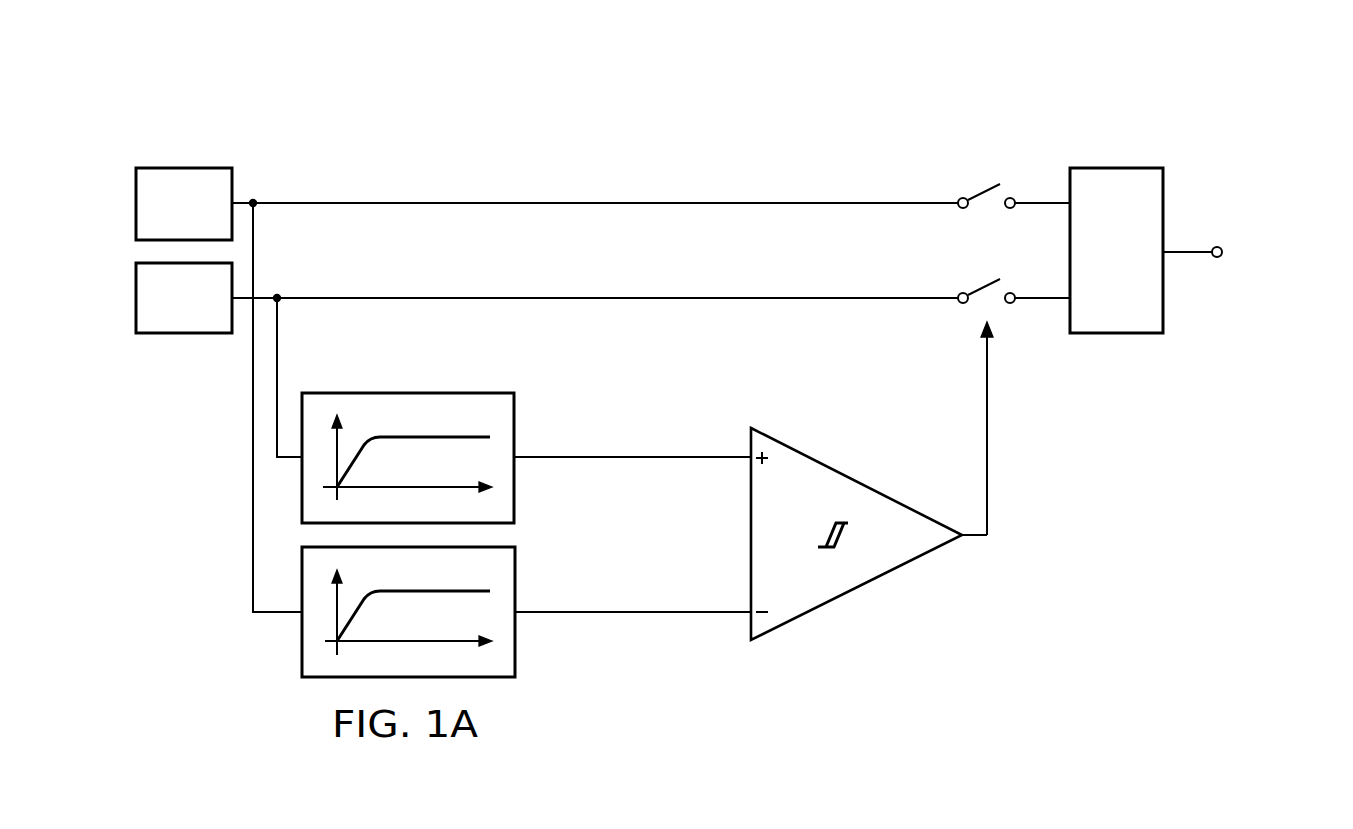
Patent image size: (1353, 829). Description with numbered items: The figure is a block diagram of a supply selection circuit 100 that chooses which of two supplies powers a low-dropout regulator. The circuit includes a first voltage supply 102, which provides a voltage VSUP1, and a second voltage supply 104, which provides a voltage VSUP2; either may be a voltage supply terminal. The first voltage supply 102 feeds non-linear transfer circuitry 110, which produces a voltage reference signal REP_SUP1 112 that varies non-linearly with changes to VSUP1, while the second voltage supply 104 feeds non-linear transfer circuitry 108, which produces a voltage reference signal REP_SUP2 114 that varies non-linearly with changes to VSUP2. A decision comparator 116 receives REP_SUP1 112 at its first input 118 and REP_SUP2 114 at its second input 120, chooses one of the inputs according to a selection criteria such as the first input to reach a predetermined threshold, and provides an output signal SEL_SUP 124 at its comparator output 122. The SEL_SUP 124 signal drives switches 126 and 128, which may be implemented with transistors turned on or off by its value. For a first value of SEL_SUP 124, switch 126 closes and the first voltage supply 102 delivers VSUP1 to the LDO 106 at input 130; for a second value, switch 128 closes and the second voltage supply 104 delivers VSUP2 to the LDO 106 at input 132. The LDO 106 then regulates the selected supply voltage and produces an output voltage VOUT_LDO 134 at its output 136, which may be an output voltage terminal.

The supply selection circuit 100 is at (408, 122).
The first voltage supply 102 is at (136, 192).
The second voltage supply 104 is at (136, 285).
The LDO 106 is at (1138, 285).
The non-linear transfer circuitry 108 is at (410, 393).
The non-linear transfer circuitry 110 is at (302, 627).
The voltage reference signal REP_SUP1 112 is at (632, 616).
The voltage reference signal REP_SUP2 114 is at (632, 462).
The decision comparator 116 is at (857, 592).
The first input 118 is at (746, 620).
The second input 120 is at (746, 466).
The comparator output 122 is at (967, 543).
The output signal SEL_SUP 124 is at (985, 433).
The switch 126 is at (985, 191).
The switch 128 is at (985, 286).
The input 130 is at (1068, 196).
The input 132 is at (1068, 291).
The output voltage VOUT_LDO 134 is at (1219, 258).
The output 136 is at (1165, 245).